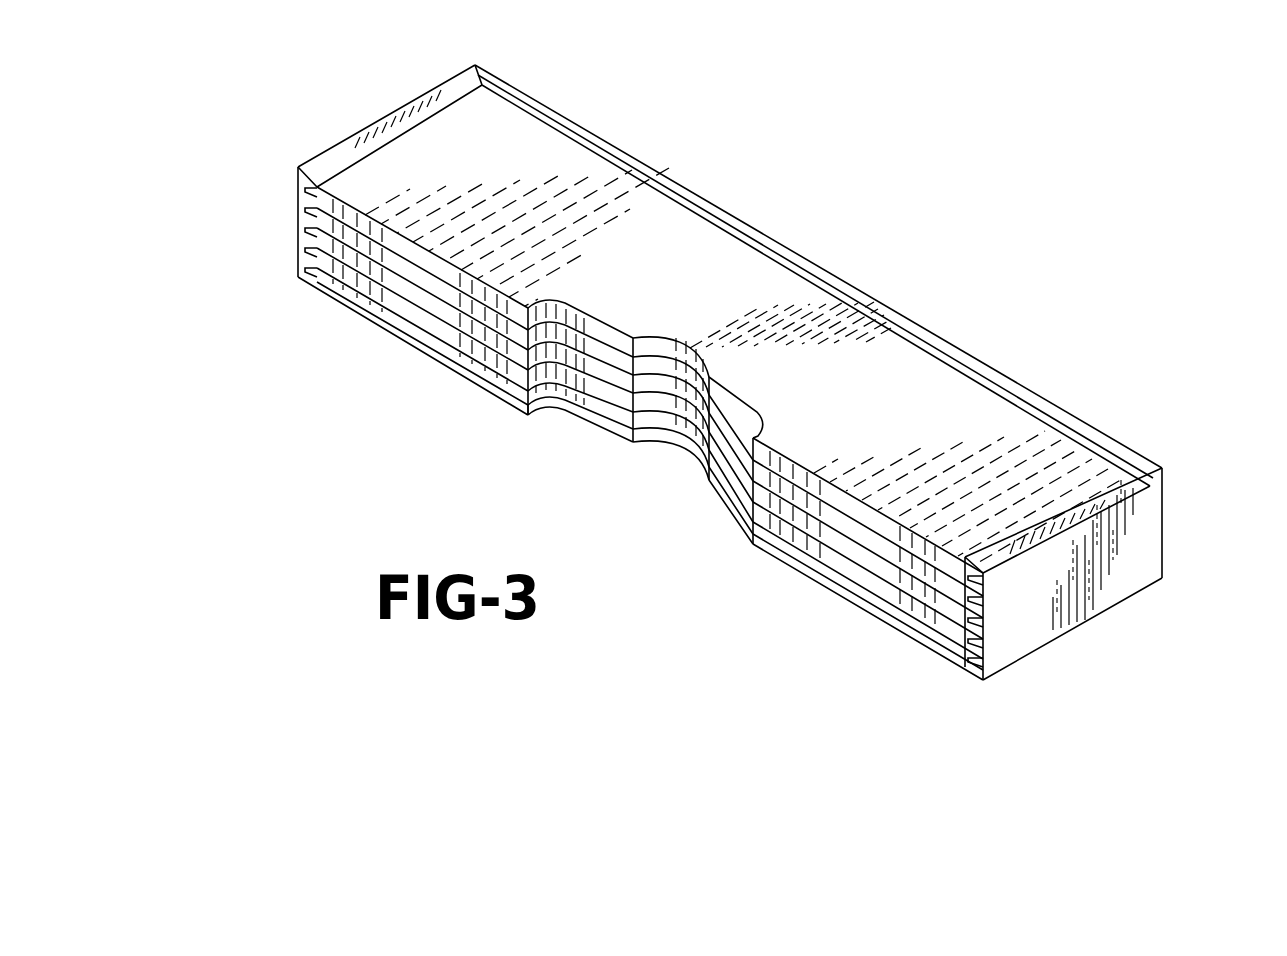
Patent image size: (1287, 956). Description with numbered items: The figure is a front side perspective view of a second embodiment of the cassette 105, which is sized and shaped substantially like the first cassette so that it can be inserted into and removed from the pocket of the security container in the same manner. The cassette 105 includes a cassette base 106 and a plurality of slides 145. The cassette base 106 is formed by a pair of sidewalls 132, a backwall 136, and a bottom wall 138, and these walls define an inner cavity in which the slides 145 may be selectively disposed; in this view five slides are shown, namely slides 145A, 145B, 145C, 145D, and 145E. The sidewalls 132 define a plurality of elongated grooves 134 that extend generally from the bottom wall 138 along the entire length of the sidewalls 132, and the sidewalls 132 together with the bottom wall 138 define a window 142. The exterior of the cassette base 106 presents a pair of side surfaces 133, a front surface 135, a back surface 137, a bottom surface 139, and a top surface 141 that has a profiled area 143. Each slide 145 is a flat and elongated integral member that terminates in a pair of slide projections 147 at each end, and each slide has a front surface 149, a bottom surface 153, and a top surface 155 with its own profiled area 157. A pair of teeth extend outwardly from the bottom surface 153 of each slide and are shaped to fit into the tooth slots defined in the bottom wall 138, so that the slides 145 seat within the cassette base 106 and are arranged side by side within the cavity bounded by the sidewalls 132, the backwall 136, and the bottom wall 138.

The cassette 105 is at (885, 226).
The cassette base 106 is at (587, 128).
The sidewalls 132 is at (322, 150).
The side surfaces 133 is at (382, 117).
The elongated grooves 134 is at (300, 188).
The front surface 135 is at (448, 92).
The backwall 136 is at (432, 366).
The back surface 137 is at (468, 380).
The bottom wall 138 is at (672, 172).
The bottom surface 139 is at (930, 332).
The top surface 141 is at (303, 283).
The window 142 is at (742, 260).
The profiled area 143 is at (665, 447).
The slides 145 is at (746, 448).
The slide 145A is at (955, 412).
The slide 145B is at (842, 532).
The slide 145C is at (870, 572).
The slide 145D is at (891, 602).
The slide 145E is at (918, 637).
The slide projections 147 is at (971, 664).
The front surface 149 is at (875, 408).
The bottom surface 153 is at (540, 120).
The top surface 155 is at (444, 288).
The profiled area 157 is at (614, 330).